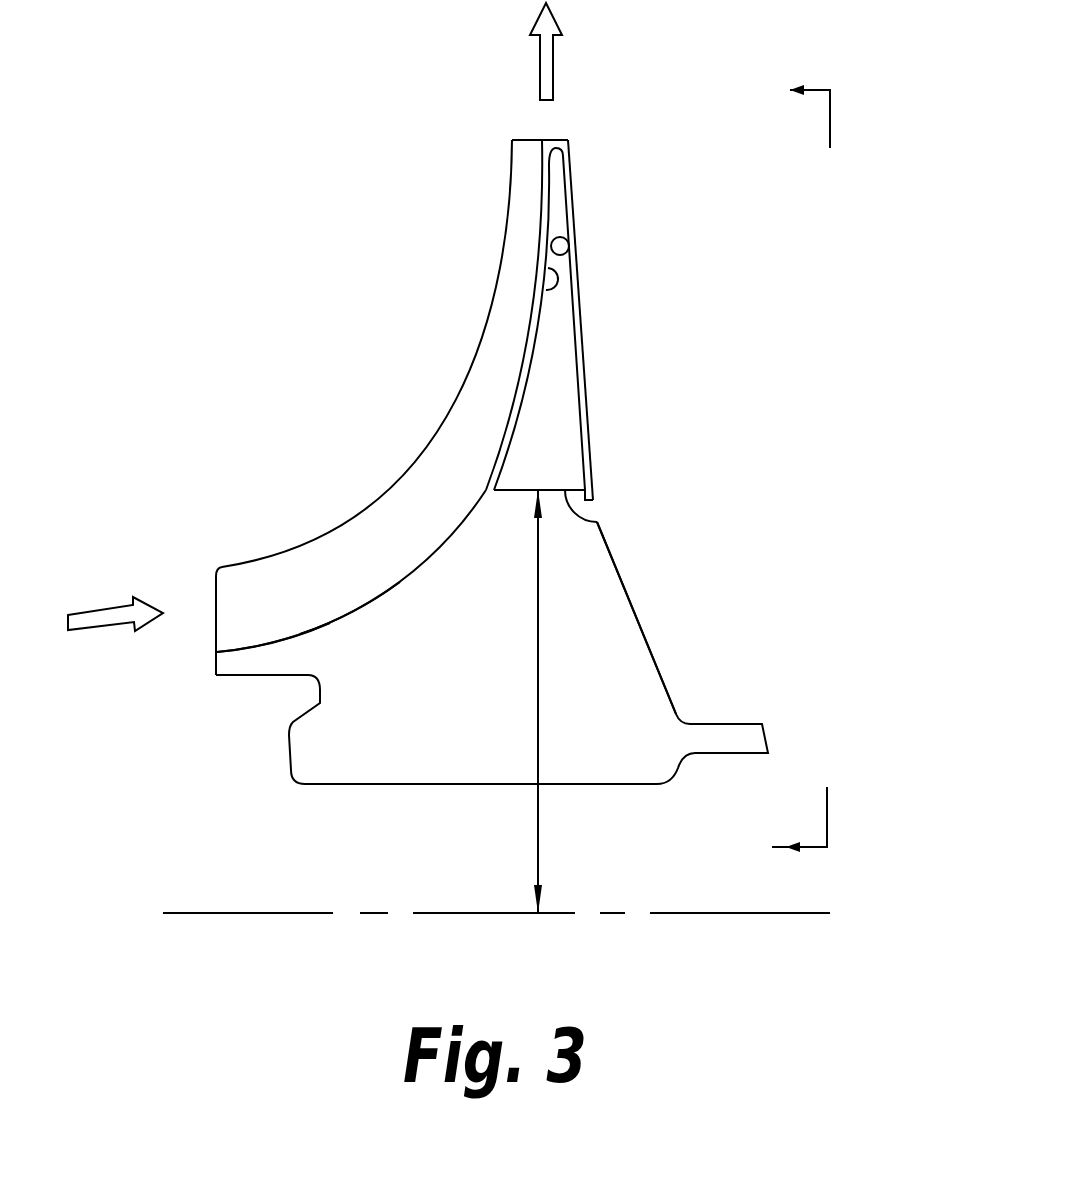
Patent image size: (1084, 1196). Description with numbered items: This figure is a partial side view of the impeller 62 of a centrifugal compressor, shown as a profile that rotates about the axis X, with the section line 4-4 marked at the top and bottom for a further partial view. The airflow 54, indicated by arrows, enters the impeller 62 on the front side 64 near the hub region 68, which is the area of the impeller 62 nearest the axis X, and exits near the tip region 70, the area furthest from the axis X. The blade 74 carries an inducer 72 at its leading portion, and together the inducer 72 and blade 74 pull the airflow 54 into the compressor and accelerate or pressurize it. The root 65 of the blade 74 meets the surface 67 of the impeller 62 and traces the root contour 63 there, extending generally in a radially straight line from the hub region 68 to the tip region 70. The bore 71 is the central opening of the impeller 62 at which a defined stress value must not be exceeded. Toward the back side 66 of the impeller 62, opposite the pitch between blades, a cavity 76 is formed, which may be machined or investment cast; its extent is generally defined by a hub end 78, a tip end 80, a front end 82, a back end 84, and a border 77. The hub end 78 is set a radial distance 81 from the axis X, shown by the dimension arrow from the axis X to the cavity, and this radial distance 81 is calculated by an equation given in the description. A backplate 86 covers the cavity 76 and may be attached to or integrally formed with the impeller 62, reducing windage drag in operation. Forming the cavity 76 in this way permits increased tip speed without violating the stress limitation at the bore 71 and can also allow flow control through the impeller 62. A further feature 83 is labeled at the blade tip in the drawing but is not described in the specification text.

The airflow 54 is at (553, 65).
The impeller 62 is at (313, 286).
The root contour 63 is at (308, 633).
The front side 64 is at (300, 478).
The root 65 is at (393, 592).
The back side 66 is at (645, 343).
The surface 67 is at (353, 620).
The hub region 68 is at (590, 723).
The tip region 70 is at (498, 160).
The bore 71 is at (366, 784).
The inducer 72 is at (243, 566).
The blade 74 is at (485, 327).
The cavity 76 is at (555, 440).
The border 77 is at (558, 315).
The hub end 78 is at (575, 515).
The tip end 80 is at (548, 140).
The radial distance 81 is at (537, 690).
The front end 82 is at (545, 262).
The tip strip 83 is at (563, 215).
The back end 84 is at (570, 255).
The backplate 86 is at (590, 378).
The axis X is at (212, 911).
The line 4- 4 is at (825, 469).